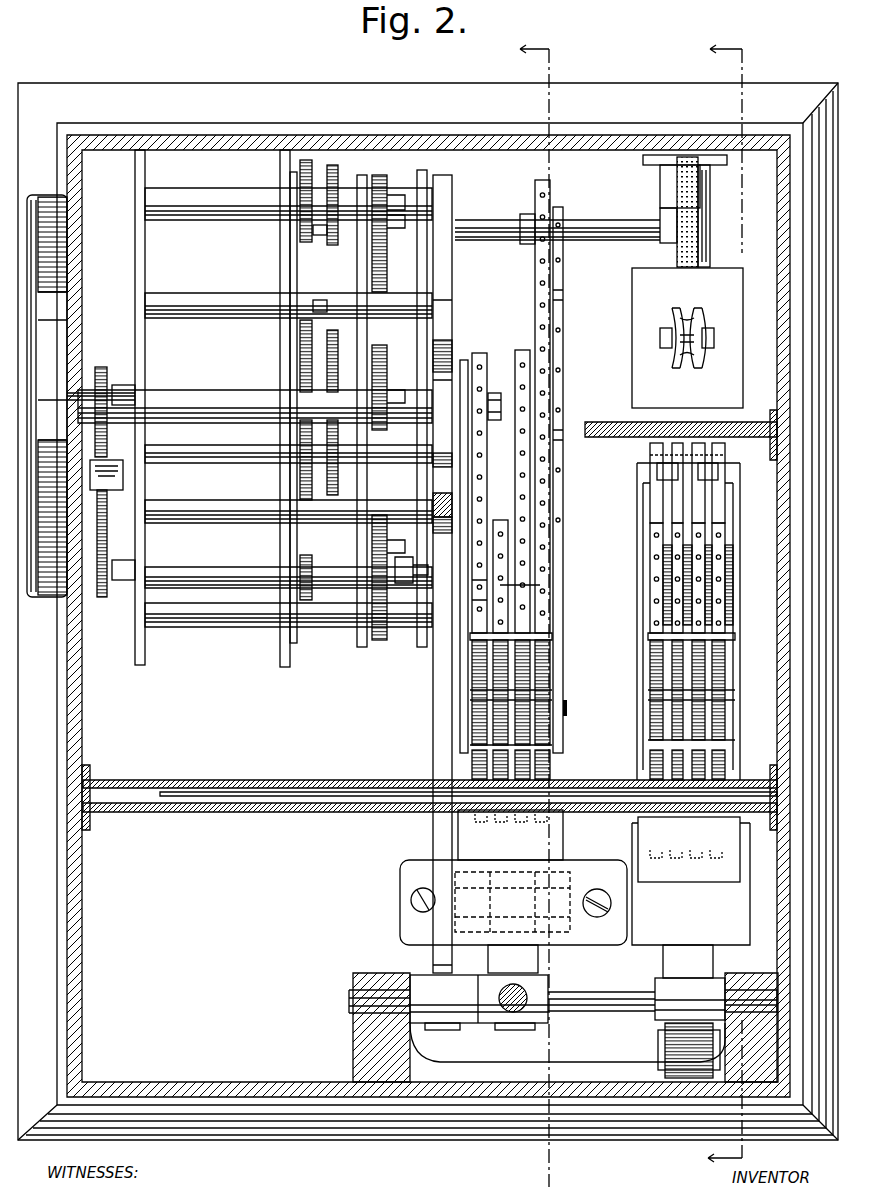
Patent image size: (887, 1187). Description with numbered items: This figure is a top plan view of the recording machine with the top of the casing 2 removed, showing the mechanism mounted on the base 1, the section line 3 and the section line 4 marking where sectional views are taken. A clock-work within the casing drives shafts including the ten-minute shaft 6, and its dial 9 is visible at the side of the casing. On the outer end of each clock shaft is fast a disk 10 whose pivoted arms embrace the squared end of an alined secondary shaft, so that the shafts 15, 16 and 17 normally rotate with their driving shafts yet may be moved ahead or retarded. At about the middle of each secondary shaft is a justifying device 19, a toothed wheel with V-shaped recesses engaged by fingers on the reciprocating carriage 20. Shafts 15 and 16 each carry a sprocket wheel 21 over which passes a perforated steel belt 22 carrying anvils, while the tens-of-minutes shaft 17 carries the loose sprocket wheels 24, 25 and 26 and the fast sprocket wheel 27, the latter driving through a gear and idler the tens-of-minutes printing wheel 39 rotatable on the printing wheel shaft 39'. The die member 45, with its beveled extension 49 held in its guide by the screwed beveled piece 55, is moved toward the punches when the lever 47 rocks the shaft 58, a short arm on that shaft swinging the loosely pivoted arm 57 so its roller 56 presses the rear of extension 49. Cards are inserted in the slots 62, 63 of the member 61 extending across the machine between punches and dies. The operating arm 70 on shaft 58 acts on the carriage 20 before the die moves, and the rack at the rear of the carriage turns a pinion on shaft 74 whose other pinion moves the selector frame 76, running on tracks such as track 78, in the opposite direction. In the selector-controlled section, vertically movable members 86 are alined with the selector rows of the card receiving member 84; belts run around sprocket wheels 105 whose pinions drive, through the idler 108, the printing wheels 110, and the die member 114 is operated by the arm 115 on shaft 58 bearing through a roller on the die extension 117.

The base 1 is at (210, 944).
The casing 2 is at (238, 142).
The section line 3- 3 is at (543, 612).
The shaft 4 is at (735, 604).
The shaft 6 is at (343, 574).
The dial 9 is at (81, 396).
The disk 10 is at (383, 207).
The shaft 15 is at (497, 243).
The shaft 16 is at (490, 400).
The shaft 17 is at (411, 568).
The justifying device 19 is at (443, 383).
The reciprocating carriage 20 is at (444, 209).
The sprocket wheel 21 is at (560, 248).
The perforated steel belt 22 is at (545, 525).
The sprocket wheel 24 is at (545, 595).
The sprocket wheel 25 is at (518, 566).
The sprocket wheel 26 is at (478, 613).
The sprocket wheel 27 is at (503, 588).
The tens-of-minutes printing wheel 39 is at (471, 765).
The printing wheel shaft 39' is at (584, 726).
The die member 45 is at (510, 835).
The lever 47 is at (525, 990).
The extension 49 is at (513, 959).
The piece 55 is at (513, 902).
The roller 56 is at (525, 1030).
The arm 57 is at (490, 1025).
The shaft 58 is at (350, 997).
The member 61 is at (300, 815).
The slot 62 is at (214, 803).
The slot 63 is at (233, 797).
The operating arm 70 is at (428, 983).
The shaft 74 is at (587, 230).
The selector frame 76 is at (687, 338).
The track 78 is at (672, 193).
The card receiving member 84 is at (628, 425).
The vertically movable member 86 is at (652, 474).
The sprocket wheel 105 is at (718, 575).
The idler 108 is at (733, 660).
The printing wheel 110 is at (660, 763).
The die member 114 is at (691, 881).
The arm 115 is at (662, 1053).
The die extension 117 is at (690, 982).